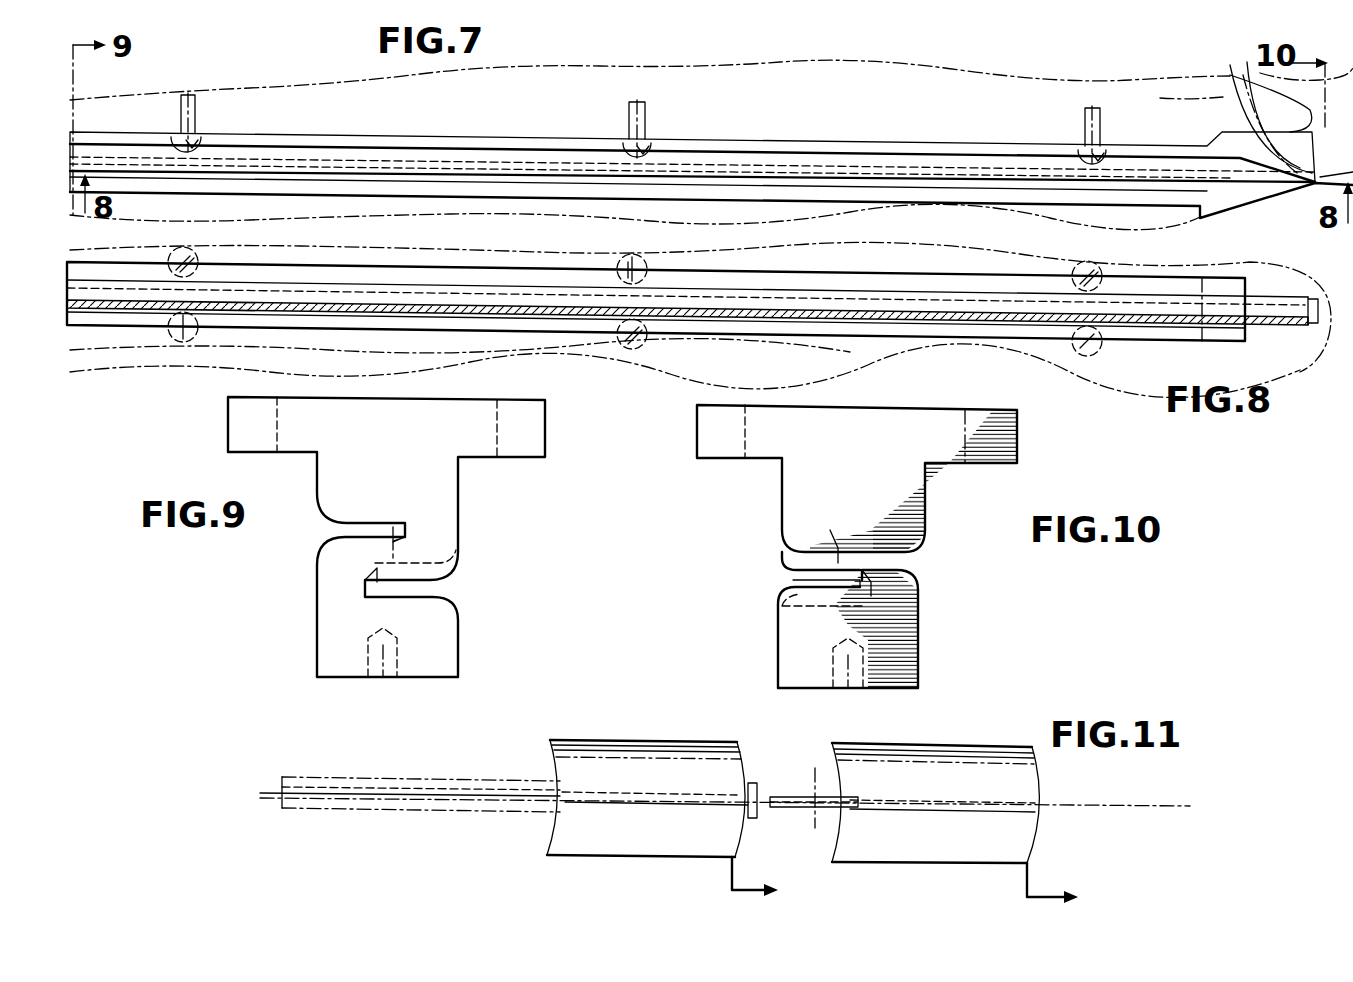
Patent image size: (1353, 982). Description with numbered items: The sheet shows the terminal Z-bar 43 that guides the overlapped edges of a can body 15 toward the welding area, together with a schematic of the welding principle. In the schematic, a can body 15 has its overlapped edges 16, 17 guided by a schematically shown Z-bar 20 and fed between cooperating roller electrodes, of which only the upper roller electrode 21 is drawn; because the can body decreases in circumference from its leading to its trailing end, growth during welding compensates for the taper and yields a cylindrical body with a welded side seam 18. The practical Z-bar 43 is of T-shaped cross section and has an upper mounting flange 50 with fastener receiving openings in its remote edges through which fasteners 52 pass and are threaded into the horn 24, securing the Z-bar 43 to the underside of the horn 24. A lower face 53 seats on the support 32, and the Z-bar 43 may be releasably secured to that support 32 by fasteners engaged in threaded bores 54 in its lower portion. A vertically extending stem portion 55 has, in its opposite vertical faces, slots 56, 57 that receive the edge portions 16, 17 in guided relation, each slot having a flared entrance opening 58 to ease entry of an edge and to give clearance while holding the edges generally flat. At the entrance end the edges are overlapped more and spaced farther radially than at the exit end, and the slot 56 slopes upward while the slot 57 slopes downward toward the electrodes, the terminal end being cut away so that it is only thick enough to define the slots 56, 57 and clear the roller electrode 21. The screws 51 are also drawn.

In FIG. 11, the can body 15 is at (647, 725).
In FIG. 11, the overlapped edge 16 is at (750, 780).
In FIG. 11, the overlapped edge 17 is at (593, 800).
In FIG. 11, the welded side seam 18 is at (1043, 805).
In FIG. 11, the Z-bar 20 is at (400, 765).
In FIG. 7, the upper roller electrode 21 is at (1223, 72).
In FIG. 11, the upper roller electrode 21 is at (785, 813).
In FIG. 7, the horn 24 is at (918, 90).
In FIG. 8, the horn 24 is at (1117, 378).
In FIG. 9, the horn 24 is at (552, 388).
In FIG. 10, the horn 24 is at (1028, 412).
In FIG. 7, the support 32 is at (898, 216).
In FIG. 7, the terminal Z-bar 43 is at (913, 160).
In FIG. 8, the terminal Z-bar 43 is at (441, 278).
In FIG. 9, the terminal Z-bar 43 is at (474, 523).
In FIG. 10, the terminal Z-bar 43 is at (772, 517).
In FIG. 7, the upper mounting flange 50 is at (825, 145).
In FIG. 8, the upper mounting flange 50 is at (808, 328).
In FIG. 9, the upper mounting flange 50 is at (307, 413).
In FIG. 10, the upper mounting flange 50 is at (772, 405).
In FIG. 7, the screw 51 is at (180, 133).
In FIG. 8, the screw 51 is at (170, 270).
In FIG. 9, the screw 51 is at (275, 437).
In FIG. 10, the screw 51 is at (743, 440).
In FIG. 7, the fastener 52 is at (212, 150).
In FIG. 8, the fastener 52 is at (200, 250).
In FIG. 9, the lower face 53 is at (343, 678).
In FIG. 10, the lower face 53 is at (792, 688).
In FIG. 9, the threaded bore 54 is at (370, 657).
In FIG. 10, the threaded bore 54 is at (837, 663).
In FIG. 9, the stem portion 55 is at (333, 627).
In FIG. 10, the stem portion 55 is at (923, 630).
In FIG. 7, the slot 56 is at (257, 173).
In FIG. 9, the slot 56 is at (405, 593).
In FIG. 10, the slot 56 is at (797, 580).
In FIG. 7, the slot 57 is at (397, 163).
In FIG. 8, the slot 57 is at (845, 300).
In FIG. 9, the slot 57 is at (367, 530).
In FIG. 10, the slot 57 is at (905, 553).
In FIG. 9, the flared entrance opening 58 is at (323, 530).